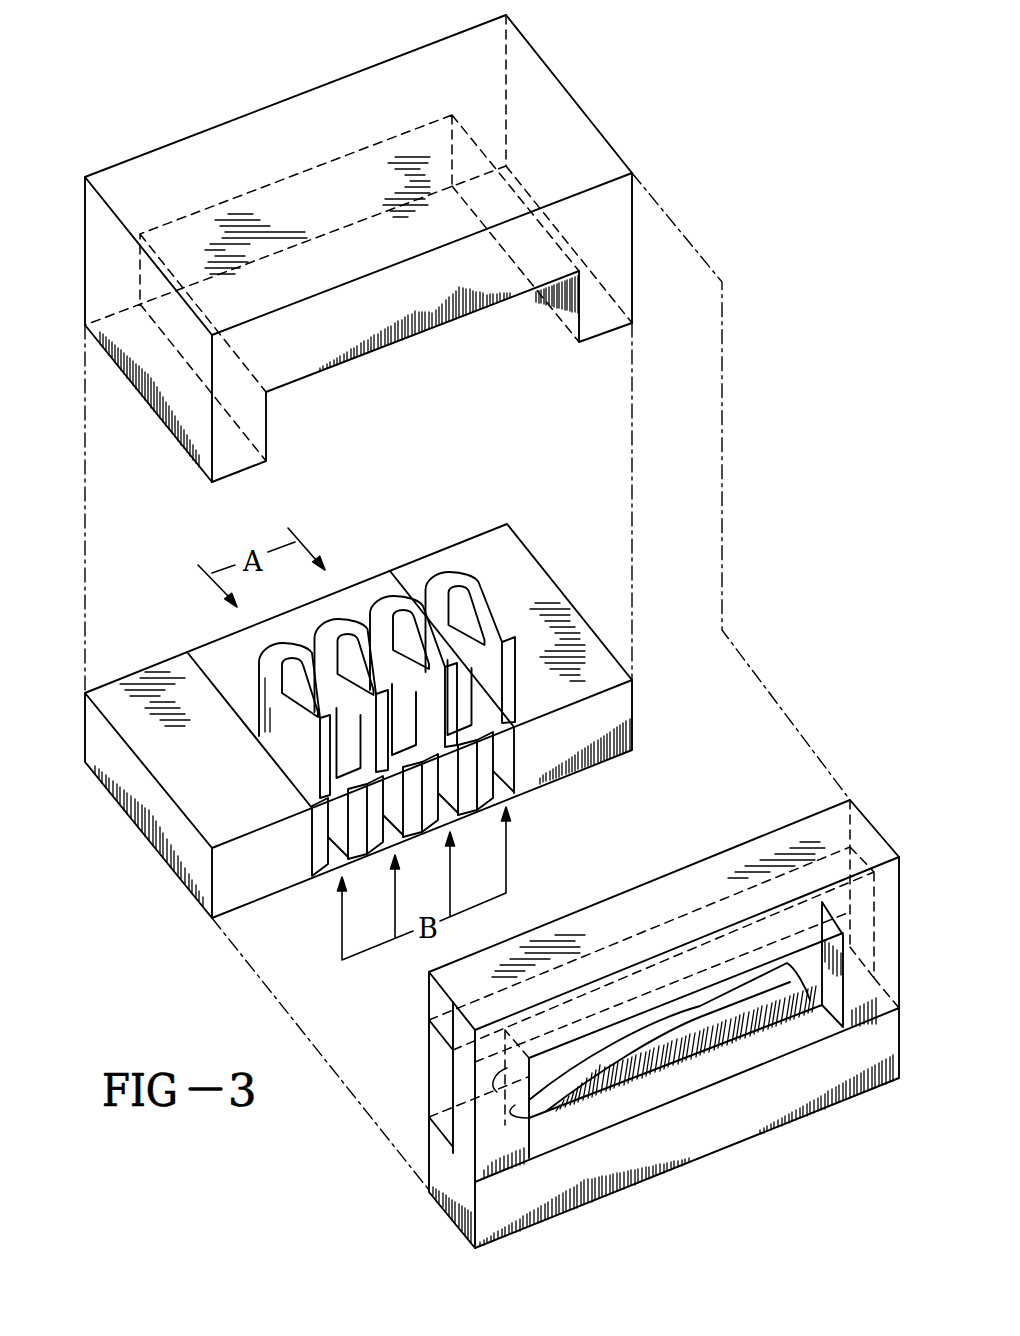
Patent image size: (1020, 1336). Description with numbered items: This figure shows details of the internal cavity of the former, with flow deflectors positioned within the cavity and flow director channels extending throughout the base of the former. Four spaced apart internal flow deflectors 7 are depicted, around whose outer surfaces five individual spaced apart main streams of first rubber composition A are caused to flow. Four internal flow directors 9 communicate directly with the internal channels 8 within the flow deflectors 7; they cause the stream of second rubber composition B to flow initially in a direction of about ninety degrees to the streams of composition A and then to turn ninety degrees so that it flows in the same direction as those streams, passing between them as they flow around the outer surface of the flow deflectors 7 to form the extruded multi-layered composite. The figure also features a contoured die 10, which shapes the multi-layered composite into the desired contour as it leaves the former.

The internal flow deflectors 7 is at (277, 653).
The internal channels 8 is at (329, 745).
The internal flow directors 9 is at (343, 823).
The contoured die 10 is at (487, 1117).